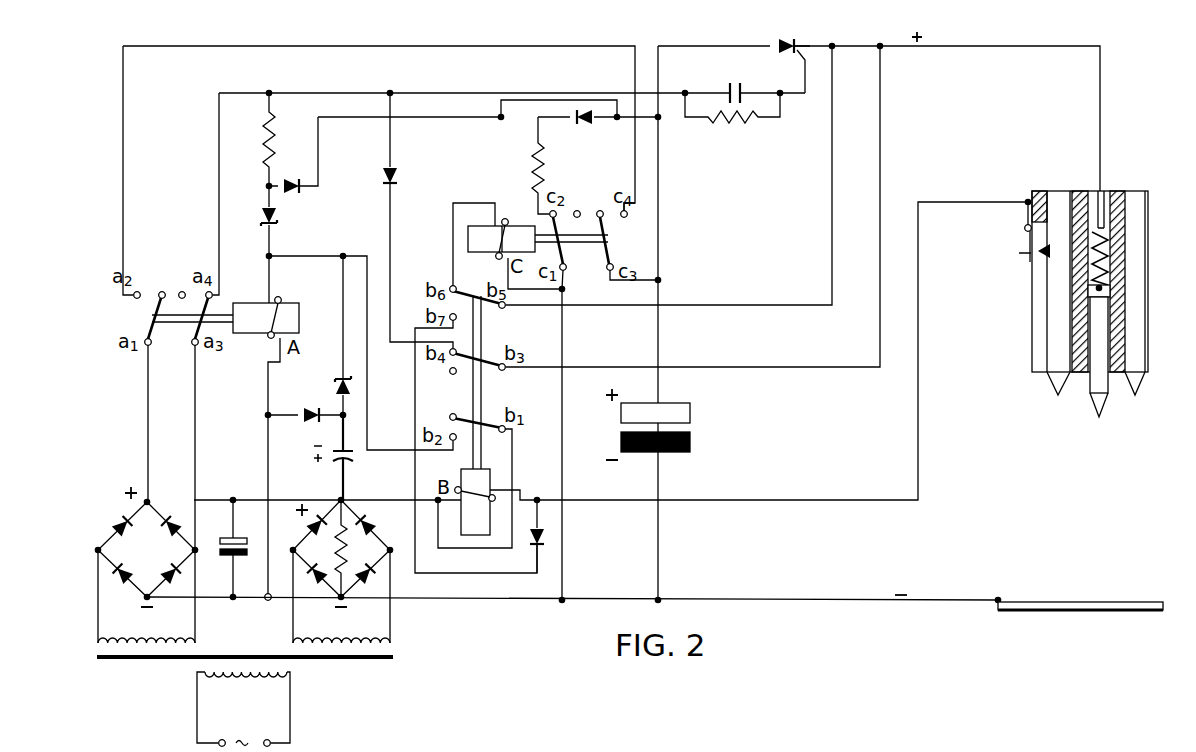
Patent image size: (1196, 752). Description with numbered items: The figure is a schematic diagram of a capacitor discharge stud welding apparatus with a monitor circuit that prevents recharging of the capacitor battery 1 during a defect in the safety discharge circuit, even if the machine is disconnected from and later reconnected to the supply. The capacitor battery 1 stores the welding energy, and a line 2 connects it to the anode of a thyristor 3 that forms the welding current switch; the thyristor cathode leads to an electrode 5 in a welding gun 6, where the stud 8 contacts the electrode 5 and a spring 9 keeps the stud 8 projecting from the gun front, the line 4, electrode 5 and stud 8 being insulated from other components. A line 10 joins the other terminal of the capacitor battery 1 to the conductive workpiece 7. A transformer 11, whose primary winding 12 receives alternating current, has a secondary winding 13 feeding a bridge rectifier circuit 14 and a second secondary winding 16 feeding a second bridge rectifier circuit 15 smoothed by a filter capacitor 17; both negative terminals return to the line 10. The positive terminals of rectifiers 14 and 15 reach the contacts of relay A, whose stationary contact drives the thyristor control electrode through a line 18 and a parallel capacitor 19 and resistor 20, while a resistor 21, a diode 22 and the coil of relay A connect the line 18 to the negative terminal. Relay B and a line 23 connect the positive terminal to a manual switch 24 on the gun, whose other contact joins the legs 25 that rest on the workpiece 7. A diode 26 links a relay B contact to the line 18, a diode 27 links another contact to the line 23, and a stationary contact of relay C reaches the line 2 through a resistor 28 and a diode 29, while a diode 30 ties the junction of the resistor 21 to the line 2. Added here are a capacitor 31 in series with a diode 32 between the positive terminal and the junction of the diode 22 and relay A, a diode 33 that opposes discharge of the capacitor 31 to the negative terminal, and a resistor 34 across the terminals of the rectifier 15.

The capacitor battery 1 is at (690, 412).
The line 2 is at (659, 212).
The thyristor 3 is at (801, 45).
The line 4 is at (861, 46).
The electrode 5 is at (1112, 295).
The welding gun 6 is at (1122, 182).
The workpiece 7 is at (1076, 603).
The stud 8 is at (1104, 402).
The spring 9 is at (1110, 246).
The line 10 is at (742, 600).
The transformer 11 is at (166, 668).
The primary winding 12 is at (245, 677).
The secondary winding 13 is at (108, 643).
The bridge rectifier circuit 14 is at (151, 500).
The second bridge rectifier circuit 15 is at (323, 500).
The second secondary winding 16 is at (350, 643).
The filter capacitor 17 is at (222, 538).
The line 18 is at (426, 93).
The capacitor 19 is at (741, 88).
The resistor 20 is at (736, 126).
The resistor 21 is at (262, 136).
The diode 22 is at (276, 221).
The line 23 is at (745, 500).
The manual switch 24 is at (1026, 258).
The legs 25 is at (1052, 381).
The diode 26 is at (400, 178).
The diode 27 is at (546, 540).
The resistor 28 is at (548, 160).
The diode 29 is at (588, 108).
The diode 30 is at (300, 192).
The capacitor 31 is at (350, 460).
The diode 32 is at (334, 383).
The diode 33 is at (311, 424).
The resistor 34 is at (322, 558).